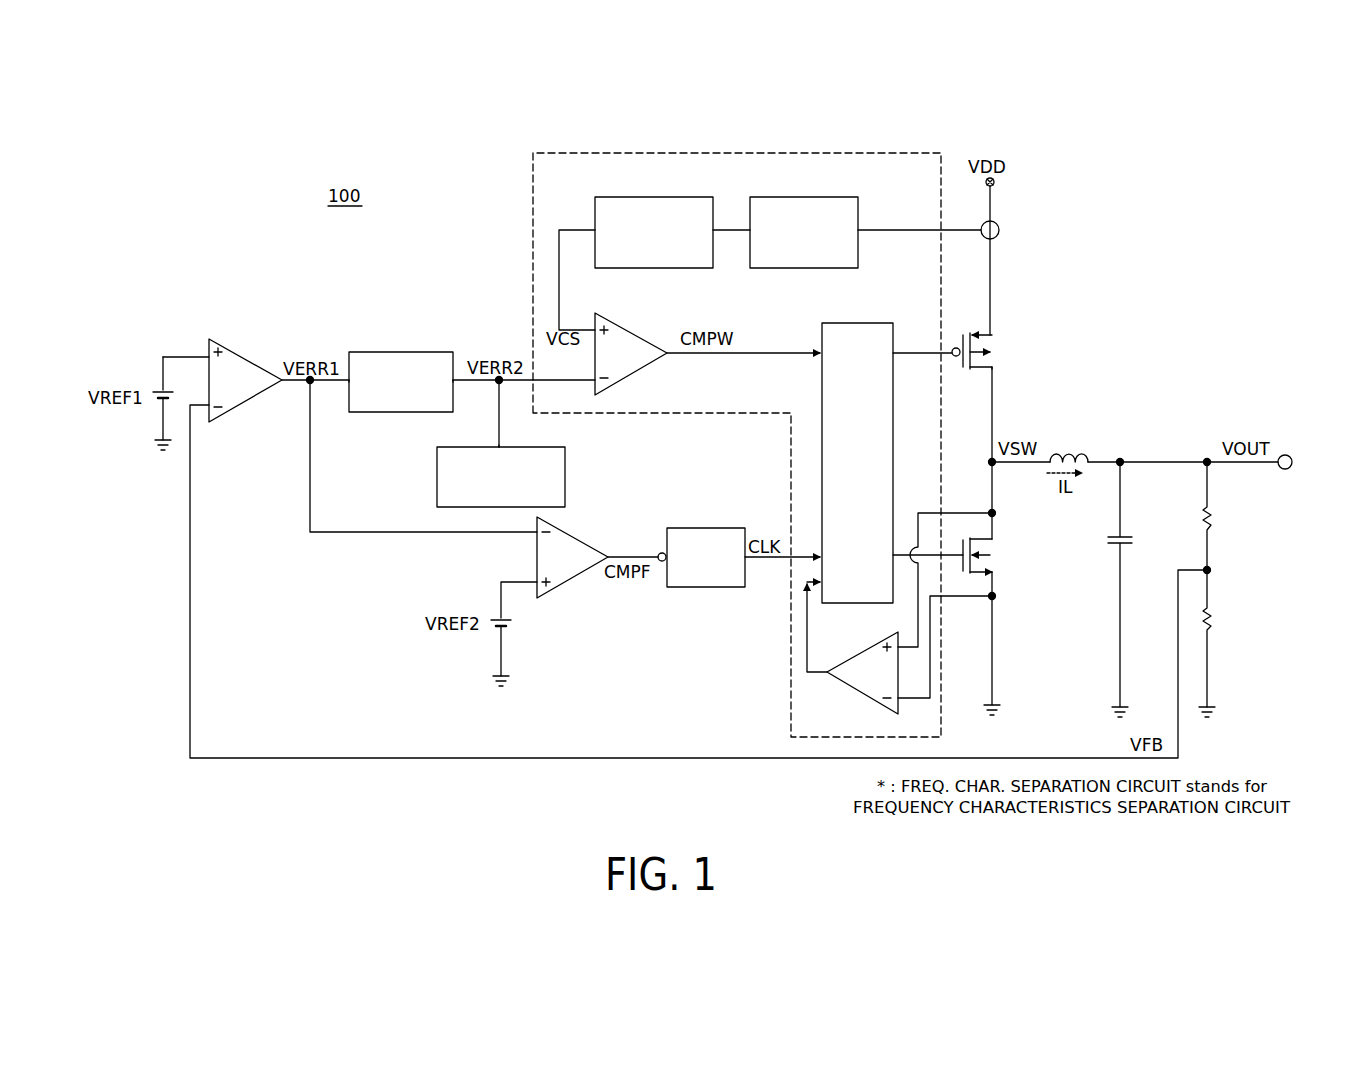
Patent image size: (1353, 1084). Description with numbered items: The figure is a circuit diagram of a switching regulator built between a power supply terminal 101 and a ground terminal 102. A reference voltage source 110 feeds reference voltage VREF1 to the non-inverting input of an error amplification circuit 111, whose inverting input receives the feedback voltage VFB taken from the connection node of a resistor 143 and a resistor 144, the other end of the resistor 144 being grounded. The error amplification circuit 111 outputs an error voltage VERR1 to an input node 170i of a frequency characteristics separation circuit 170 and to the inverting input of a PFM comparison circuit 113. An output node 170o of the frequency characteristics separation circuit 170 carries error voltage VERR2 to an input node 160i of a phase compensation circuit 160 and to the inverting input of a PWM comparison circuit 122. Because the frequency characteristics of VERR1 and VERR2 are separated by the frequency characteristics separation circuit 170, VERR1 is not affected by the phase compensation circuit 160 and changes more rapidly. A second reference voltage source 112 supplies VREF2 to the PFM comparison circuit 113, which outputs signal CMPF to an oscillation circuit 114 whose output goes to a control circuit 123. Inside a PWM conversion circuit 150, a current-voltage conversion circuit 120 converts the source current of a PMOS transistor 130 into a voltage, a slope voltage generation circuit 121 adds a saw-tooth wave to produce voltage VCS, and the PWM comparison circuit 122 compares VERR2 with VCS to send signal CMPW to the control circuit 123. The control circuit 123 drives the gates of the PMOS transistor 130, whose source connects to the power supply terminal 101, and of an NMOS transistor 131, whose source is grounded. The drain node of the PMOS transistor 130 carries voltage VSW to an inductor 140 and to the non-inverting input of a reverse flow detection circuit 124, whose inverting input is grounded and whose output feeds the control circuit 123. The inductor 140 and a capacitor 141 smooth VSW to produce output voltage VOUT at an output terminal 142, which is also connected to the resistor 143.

The power supply terminal 101 is at (998, 180).
The ground terminal 102 is at (998, 705).
The reference voltage source 110 is at (160, 385).
The error amplification circuit 111 is at (248, 356).
The reference voltage source 112 is at (512, 628).
The PFM comparison circuit 113 is at (572, 533).
The oscillation circuit 114 is at (715, 527).
The current-voltage conversion circuit 120 is at (796, 197).
The slope voltage generation circuit 121 is at (666, 197).
The PWM comparison circuit 122 is at (642, 331).
The control circuit 123 is at (850, 322).
The reverse flow detection circuit 124 is at (864, 698).
The PMOS transistor 130 is at (996, 366).
The NMOS transistor 131 is at (996, 572).
The inductor 140 is at (1080, 453).
The capacitor 141 is at (1125, 535).
The output terminal 142 is at (1290, 455).
The resistor 143 is at (1212, 518).
The resistor 144 is at (1212, 621).
The PWM conversion circuit 150 is at (872, 151).
The phase compensation circuit 160 is at (567, 466).
The input node 160i is at (498, 445).
The frequency characteristics separation circuit 170 is at (402, 350).
The input node 170i is at (347, 372).
The output node 170o is at (456, 372).